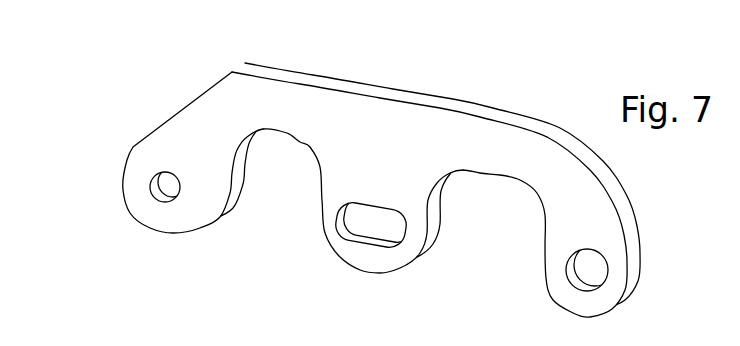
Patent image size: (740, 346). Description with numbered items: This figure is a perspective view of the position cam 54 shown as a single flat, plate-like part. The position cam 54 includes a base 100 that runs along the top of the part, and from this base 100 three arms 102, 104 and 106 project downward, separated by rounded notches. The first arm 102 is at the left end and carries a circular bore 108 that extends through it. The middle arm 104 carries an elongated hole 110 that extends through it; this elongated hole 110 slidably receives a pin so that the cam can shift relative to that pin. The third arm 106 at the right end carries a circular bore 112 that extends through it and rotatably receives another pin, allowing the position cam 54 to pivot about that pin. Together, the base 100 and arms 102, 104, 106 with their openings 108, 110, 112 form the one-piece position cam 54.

The position cam 54 is at (498, 72).
The base 100 is at (353, 110).
The arm 102 is at (153, 218).
The arm 104 is at (360, 260).
The arm 106 is at (577, 300).
The circular bore 108 is at (158, 182).
The elongated hole 110 is at (343, 224).
The circular bore 112 is at (566, 263).